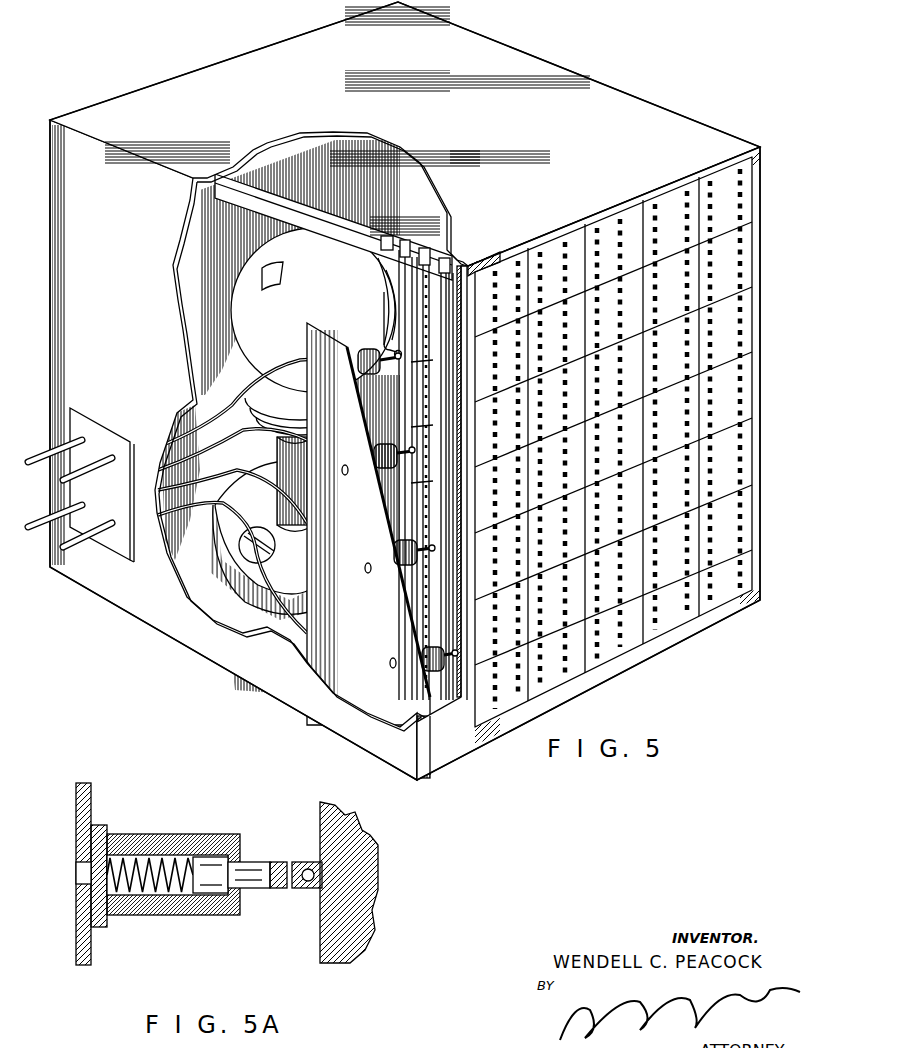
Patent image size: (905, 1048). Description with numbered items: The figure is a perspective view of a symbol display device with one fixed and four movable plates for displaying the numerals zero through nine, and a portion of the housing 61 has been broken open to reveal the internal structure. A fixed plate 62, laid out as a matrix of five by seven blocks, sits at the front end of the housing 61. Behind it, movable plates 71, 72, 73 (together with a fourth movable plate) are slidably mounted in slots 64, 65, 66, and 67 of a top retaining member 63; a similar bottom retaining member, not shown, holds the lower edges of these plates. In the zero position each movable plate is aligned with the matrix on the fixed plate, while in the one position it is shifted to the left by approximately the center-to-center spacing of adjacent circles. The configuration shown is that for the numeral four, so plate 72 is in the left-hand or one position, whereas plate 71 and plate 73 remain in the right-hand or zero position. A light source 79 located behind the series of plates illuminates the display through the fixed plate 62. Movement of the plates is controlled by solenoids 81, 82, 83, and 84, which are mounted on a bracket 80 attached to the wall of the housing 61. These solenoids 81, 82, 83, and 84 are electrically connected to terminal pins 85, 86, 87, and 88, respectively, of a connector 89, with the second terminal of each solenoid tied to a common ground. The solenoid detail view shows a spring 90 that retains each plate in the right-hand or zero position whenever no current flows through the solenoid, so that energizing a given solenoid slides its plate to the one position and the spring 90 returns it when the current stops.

In FIG. 5, the housing 61 is at (520, 63).
In FIG. 5, the fixed plate 62 is at (728, 215).
In FIG. 5, the top retaining member 63 is at (423, 193).
In FIG. 5, the slot 64 is at (389, 238).
In FIG. 5, the slot 65 is at (407, 244).
In FIG. 5, the slot 66 is at (432, 252).
In FIG. 5, the slot 67 is at (480, 258).
In FIG. 5, the movable plate 71 is at (388, 278).
In FIG. 5A, the movable plate 71 is at (322, 826).
In FIG. 5, the movable plate 72 is at (451, 262).
In FIG. 5, the movable plate 73 is at (476, 265).
In FIG. 5, the light source 79 is at (240, 352).
In FIG. 5, the bracket 80 is at (311, 574).
In FIG. 5A, the bracket 80 is at (76, 920).
In FIG. 5, the solenoid 81 is at (363, 348).
In FIG. 5A, the solenoid 81 is at (200, 835).
In FIG. 5, the solenoid 82 is at (376, 455).
In FIG. 5, the solenoid 83 is at (387, 568).
In FIG. 5, the solenoid 84 is at (422, 657).
In FIG. 5, the terminal pin 85 is at (42, 458).
In FIG. 5, the terminal pin 86 is at (108, 463).
In FIG. 5, the terminal pin 87 is at (112, 529).
In FIG. 5, the terminal pin 88 is at (35, 545).
In FIG. 5, the connector 89 is at (100, 432).
In FIG. 5A, the spring 90 is at (135, 912).